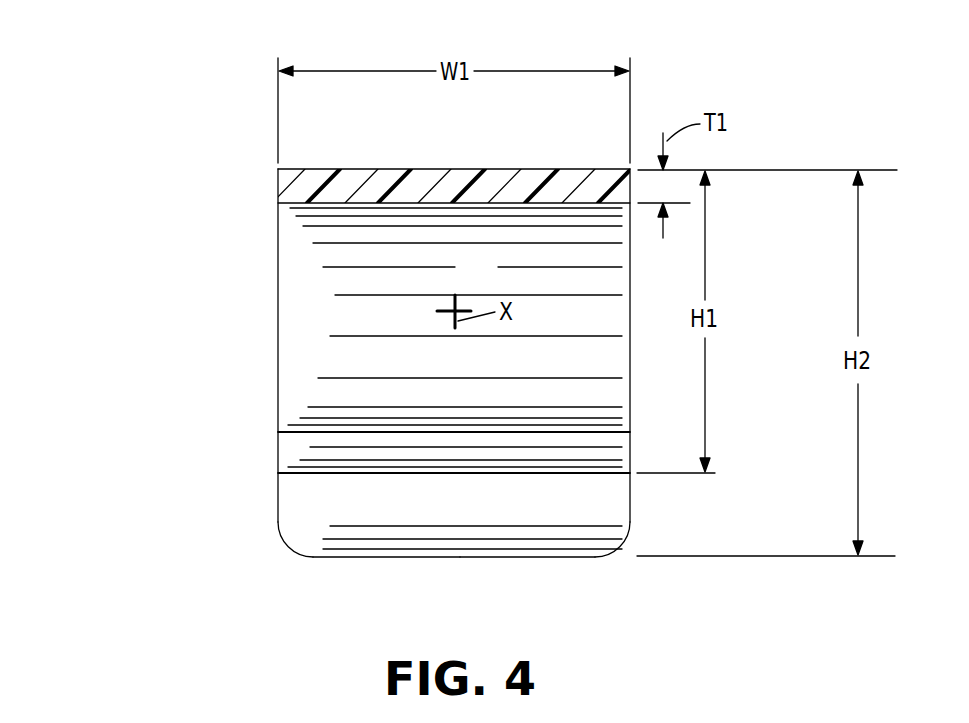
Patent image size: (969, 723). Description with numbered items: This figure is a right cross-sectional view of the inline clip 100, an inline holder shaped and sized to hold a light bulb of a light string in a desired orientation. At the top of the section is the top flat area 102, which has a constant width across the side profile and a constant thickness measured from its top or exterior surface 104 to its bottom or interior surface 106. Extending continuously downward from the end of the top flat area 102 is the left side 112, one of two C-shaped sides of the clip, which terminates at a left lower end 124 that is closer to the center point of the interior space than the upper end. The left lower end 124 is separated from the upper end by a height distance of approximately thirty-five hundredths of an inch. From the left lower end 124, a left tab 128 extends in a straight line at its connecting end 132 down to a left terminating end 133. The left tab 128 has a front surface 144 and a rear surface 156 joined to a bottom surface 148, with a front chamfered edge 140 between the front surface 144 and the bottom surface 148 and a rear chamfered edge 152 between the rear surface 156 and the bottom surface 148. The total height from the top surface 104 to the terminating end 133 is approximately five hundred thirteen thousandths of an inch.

The inline clip 100 is at (196, 92).
The top flat area 102 is at (536, 155).
The top surface 104 is at (396, 168).
The bottom surface 106 is at (461, 204).
The left side 112 is at (327, 325).
The left lower end 124 is at (317, 470).
The left tab 128 is at (303, 510).
The connecting end 132 is at (298, 470).
The left terminating end 133 is at (375, 558).
The front chamfered edge 140 is at (278, 559).
The front surface 144 is at (277, 497).
The bottom surface 148 is at (543, 558).
The rear chamfered edge 152 is at (646, 548).
The rear surface 156 is at (632, 500).